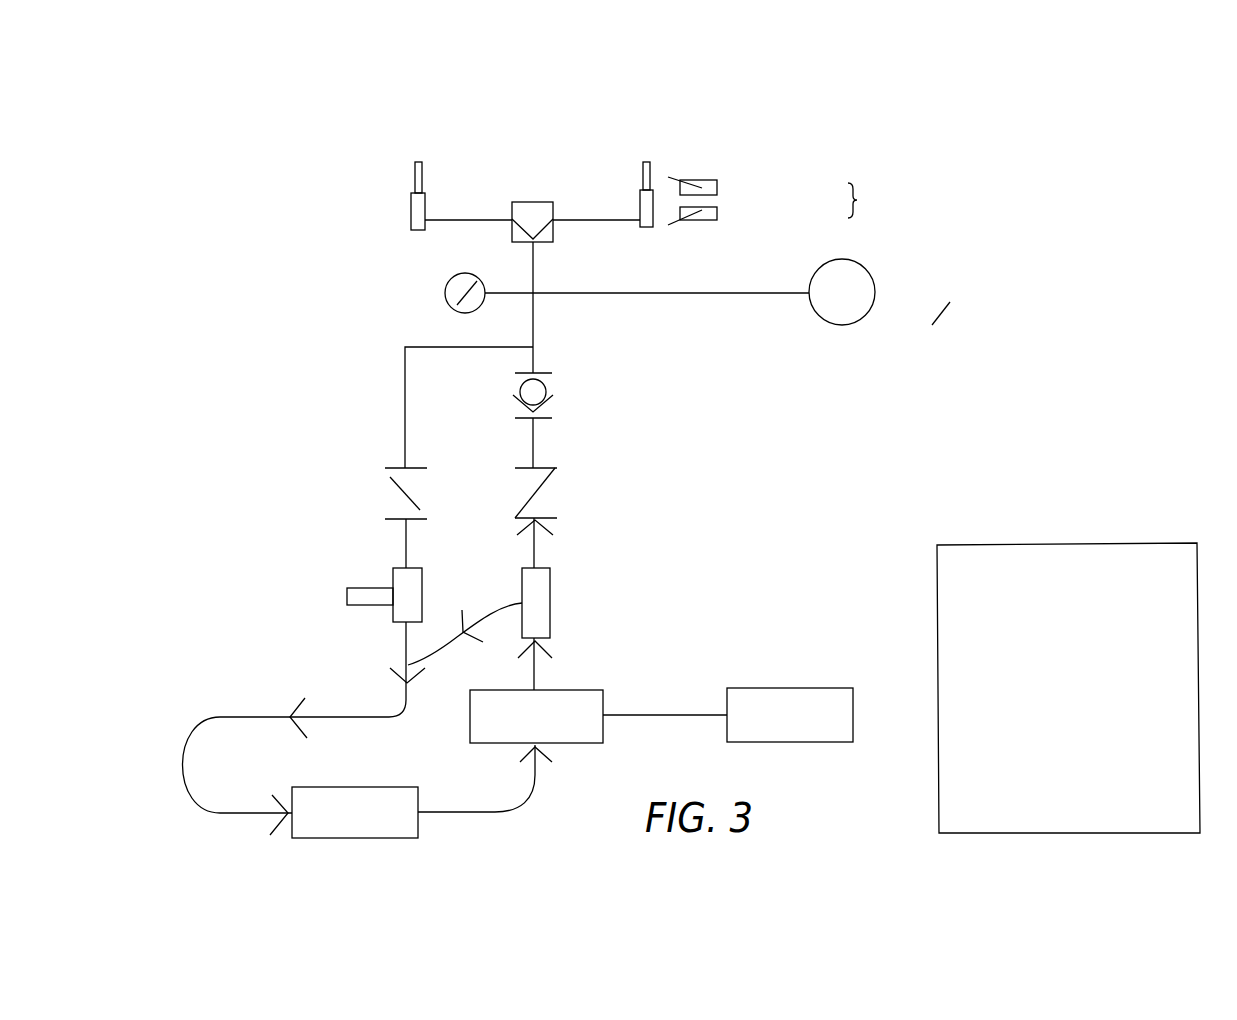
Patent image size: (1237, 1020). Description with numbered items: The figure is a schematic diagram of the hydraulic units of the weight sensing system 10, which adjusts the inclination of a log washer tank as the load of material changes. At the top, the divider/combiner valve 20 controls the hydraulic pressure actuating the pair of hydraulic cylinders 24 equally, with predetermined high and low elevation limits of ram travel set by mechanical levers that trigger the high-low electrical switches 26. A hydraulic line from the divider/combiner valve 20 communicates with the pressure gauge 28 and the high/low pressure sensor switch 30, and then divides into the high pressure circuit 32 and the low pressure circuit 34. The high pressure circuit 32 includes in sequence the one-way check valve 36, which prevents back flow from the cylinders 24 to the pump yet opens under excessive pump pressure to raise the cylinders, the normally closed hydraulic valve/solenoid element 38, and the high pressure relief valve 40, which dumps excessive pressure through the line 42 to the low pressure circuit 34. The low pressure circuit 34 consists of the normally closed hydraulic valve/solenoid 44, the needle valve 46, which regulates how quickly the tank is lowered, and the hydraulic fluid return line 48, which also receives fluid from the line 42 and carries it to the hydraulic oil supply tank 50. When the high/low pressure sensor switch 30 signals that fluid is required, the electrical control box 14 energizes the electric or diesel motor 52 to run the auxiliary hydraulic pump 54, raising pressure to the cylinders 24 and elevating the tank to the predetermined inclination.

The weight sensing system 10 is at (1025, 180).
The electrical control box 14 is at (1101, 689).
The divider/combiner valve 20 is at (540, 202).
The hydraulic cylinders 24 is at (628, 105).
The high-low electrical switches 26 is at (823, 163).
The pressure gauge 28 is at (455, 277).
The high/low pressure sensor switch 30 is at (1163, 290).
The high pressure circuit 32 is at (550, 353).
The low pressure circuit 34 is at (388, 402).
The one-way check valve 36 is at (695, 380).
The hydraulic valve/solenoid element 38 is at (633, 465).
The high pressure relief valve 40 is at (698, 625).
The line 42 is at (497, 607).
The hydraulic valve/solenoid 44 is at (340, 467).
The needle valve 46 is at (363, 607).
The hydraulic fluid return line 48 is at (258, 808).
The hydraulic oil supply tank 50 is at (397, 787).
The electric or diesel motor 52 is at (808, 688).
The auxiliary hydraulic pump 54 is at (590, 688).